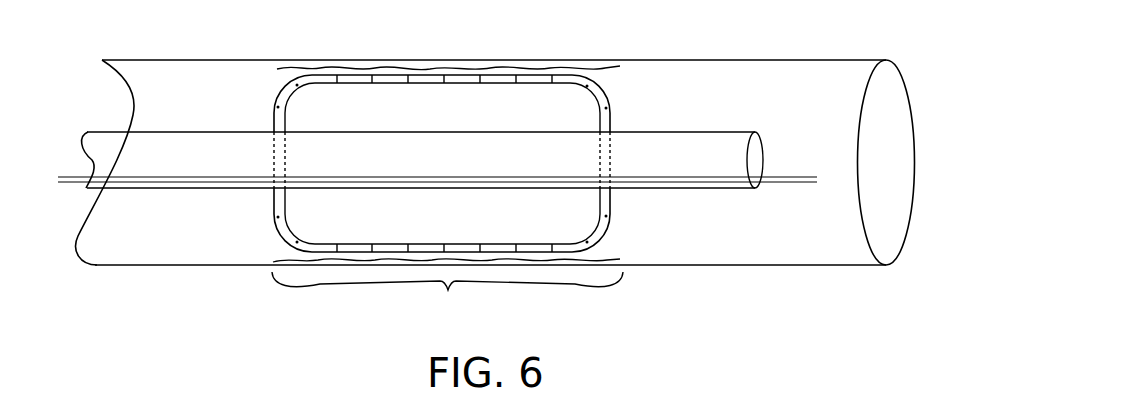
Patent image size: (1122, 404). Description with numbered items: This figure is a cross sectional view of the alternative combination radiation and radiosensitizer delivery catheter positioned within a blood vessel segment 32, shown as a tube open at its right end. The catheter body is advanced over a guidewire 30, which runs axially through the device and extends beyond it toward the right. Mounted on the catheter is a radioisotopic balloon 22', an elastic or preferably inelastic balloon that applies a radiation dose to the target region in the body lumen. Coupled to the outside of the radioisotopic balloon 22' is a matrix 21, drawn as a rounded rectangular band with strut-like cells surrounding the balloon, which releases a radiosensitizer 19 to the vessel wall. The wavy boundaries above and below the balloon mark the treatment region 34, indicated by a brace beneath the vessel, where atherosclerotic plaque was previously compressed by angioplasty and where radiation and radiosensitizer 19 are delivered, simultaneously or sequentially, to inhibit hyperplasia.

The radiosensitizer 19 is at (323, 75).
The matrix 21 is at (607, 97).
The radioisotopic balloon 22' is at (446, 139).
The guidewire 30 is at (770, 183).
The blood vessel segment 32 is at (747, 67).
The treatment region 34 is at (447, 300).